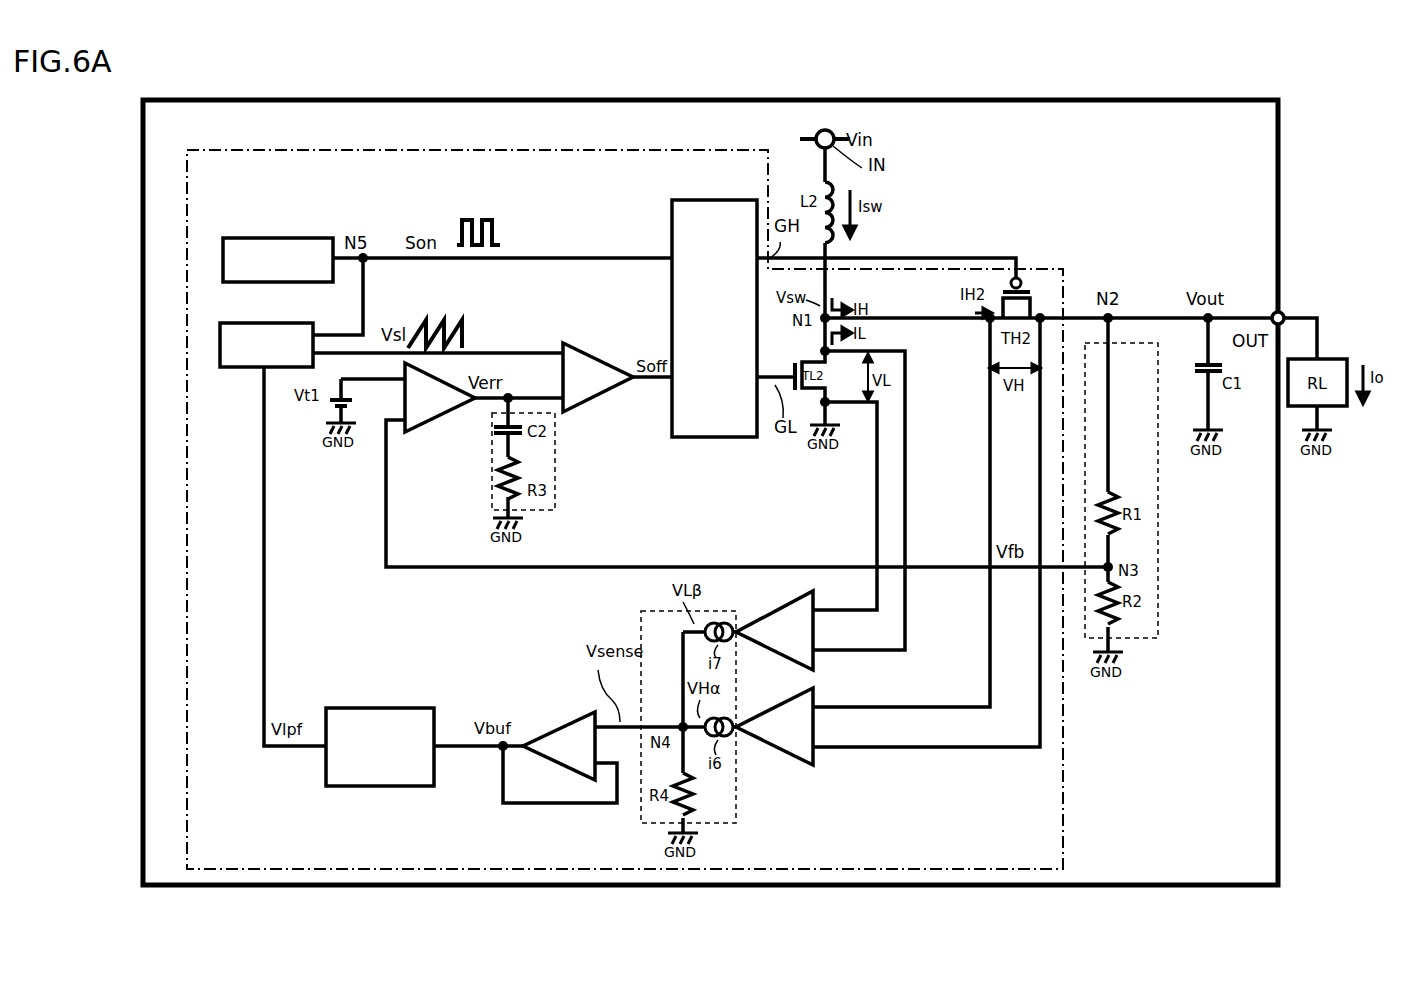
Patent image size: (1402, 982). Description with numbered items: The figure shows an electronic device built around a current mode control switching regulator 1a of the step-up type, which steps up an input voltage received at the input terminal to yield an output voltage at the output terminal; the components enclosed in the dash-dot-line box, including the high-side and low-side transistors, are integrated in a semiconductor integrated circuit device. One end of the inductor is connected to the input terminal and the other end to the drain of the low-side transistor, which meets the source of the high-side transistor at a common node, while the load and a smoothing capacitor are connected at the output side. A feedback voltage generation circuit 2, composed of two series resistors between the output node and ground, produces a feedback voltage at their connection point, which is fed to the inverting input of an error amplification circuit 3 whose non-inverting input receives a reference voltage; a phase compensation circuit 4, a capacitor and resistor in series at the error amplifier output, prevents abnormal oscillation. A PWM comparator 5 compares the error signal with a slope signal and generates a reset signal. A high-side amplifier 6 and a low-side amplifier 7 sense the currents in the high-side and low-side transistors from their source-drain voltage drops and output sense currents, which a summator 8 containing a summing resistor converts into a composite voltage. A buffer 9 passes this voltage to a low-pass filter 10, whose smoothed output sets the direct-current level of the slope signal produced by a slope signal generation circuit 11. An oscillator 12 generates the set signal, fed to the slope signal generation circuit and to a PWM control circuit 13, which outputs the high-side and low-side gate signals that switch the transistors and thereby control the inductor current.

The current mode control switching regulator 1a is at (760, 100).
The feedback voltage generation circuit 2 is at (1158, 540).
The error amplification circuit 3 is at (426, 425).
The phase compensation circuit 4 is at (555, 470).
The PWM comparator 5 is at (600, 360).
The high-side amplifier 6 is at (763, 750).
The low-side amplifier 7 is at (765, 613).
The summator 8 is at (736, 797).
The buffer 9 is at (553, 725).
The low-pass filter 10 is at (433, 706).
The slope signal generation circuit 11 is at (302, 323).
The oscillator 12 is at (276, 238).
The PWM control circuit 13 is at (690, 200).